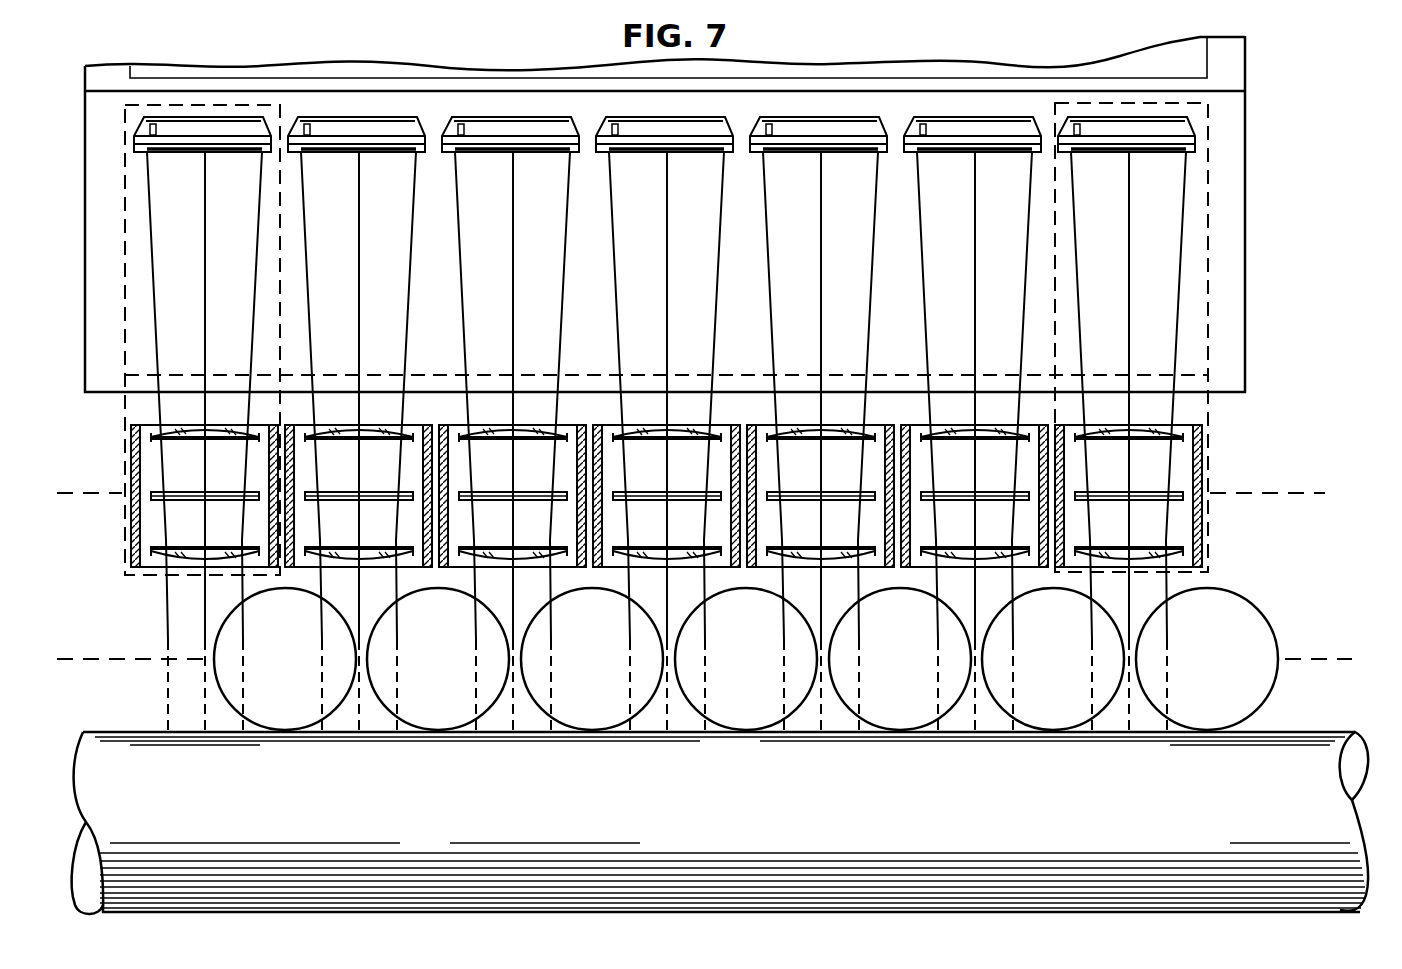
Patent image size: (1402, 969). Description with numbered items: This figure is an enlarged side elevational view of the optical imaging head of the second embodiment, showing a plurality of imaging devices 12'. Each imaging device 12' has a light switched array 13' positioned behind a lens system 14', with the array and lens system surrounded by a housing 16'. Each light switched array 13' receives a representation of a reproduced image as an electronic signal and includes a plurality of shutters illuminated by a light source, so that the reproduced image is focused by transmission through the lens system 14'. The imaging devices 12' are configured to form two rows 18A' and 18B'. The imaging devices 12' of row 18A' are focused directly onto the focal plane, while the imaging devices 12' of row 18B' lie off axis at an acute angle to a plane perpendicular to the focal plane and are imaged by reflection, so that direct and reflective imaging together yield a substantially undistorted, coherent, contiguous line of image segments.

The light switched array 13' is at (664, 384).
The lens system 14' is at (674, 488).
The housing 16' is at (680, 496).
The imaging device 12' is at (724, 645).
The row 18A' is at (718, 494).
The row 18B' is at (729, 659).